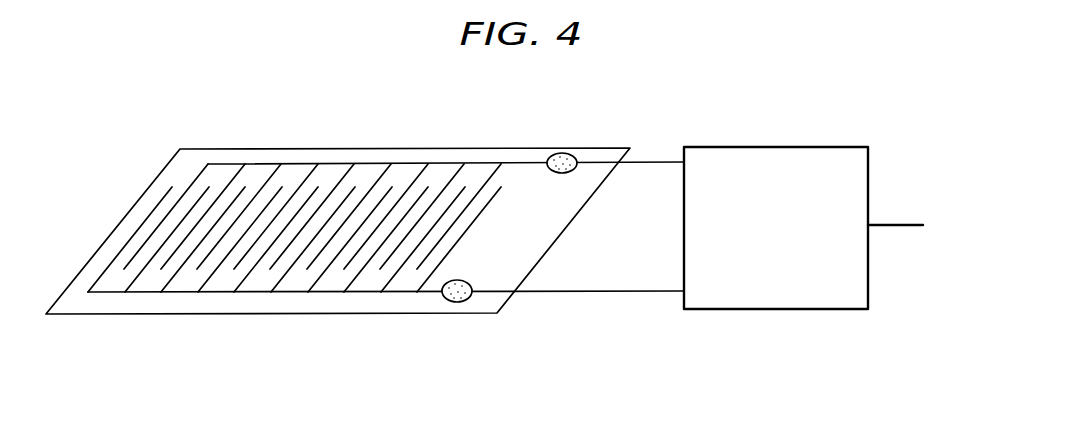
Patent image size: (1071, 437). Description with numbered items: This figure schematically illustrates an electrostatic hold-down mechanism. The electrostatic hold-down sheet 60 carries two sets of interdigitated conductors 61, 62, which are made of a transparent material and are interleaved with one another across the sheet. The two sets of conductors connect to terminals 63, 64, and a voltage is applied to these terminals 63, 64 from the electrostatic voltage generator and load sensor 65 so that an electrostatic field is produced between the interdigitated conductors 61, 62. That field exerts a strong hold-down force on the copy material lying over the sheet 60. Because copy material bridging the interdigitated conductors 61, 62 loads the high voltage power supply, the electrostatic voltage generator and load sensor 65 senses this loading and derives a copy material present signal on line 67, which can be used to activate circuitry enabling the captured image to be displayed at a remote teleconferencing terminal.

The electrostatic hold-down sheet 60 is at (240, 315).
The interdigitated conductors 61 is at (319, 194).
The interdigitated conductors 62 is at (455, 176).
The terminal 63 is at (564, 153).
The terminal 64 is at (458, 302).
The electrostatic voltage generator and load sensor 65 is at (811, 147).
The line 67 is at (897, 225).